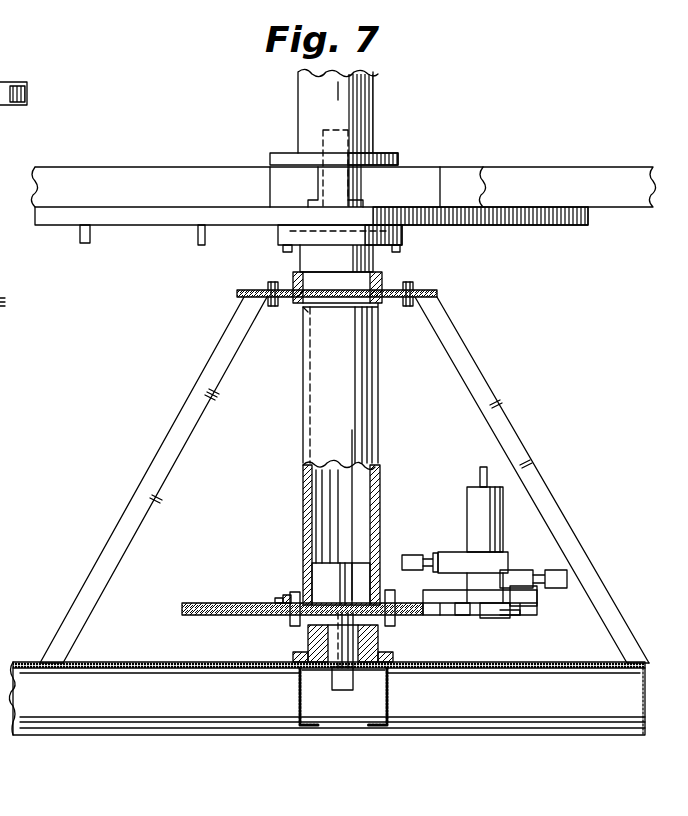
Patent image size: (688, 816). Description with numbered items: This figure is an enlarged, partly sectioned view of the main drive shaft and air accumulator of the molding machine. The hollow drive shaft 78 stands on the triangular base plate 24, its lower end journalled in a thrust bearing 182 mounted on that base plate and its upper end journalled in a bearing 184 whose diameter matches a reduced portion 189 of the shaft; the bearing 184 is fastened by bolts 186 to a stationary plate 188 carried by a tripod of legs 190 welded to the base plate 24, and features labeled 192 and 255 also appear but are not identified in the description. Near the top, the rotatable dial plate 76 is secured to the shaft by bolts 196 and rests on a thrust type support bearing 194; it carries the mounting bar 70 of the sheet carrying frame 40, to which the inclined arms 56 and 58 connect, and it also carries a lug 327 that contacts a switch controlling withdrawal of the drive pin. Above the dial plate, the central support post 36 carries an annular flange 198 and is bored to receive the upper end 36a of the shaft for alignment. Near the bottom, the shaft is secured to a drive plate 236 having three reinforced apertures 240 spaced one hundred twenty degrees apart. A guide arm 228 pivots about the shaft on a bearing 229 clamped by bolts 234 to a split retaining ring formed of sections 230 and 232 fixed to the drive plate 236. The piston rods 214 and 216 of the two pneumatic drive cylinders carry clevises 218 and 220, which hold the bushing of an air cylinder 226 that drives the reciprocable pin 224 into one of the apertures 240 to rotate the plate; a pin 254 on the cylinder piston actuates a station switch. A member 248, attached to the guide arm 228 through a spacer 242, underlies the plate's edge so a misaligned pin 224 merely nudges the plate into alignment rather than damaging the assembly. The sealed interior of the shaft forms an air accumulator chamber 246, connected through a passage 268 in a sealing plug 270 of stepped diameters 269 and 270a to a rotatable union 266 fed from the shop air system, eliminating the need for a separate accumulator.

The base plate 24 is at (640, 720).
The central support post 36 is at (363, 88).
The upper end of the drive shaft 36a is at (358, 184).
The sheet carrying frame 40 is at (345, 167).
The arm 56 is at (150, 185).
The arm 58 is at (602, 156).
The mounting bar 70 is at (410, 190).
The dial plate 76 is at (527, 217).
The drive shaft 78 is at (360, 430).
The thrust bearing 182 is at (310, 643).
The bearing 184 is at (382, 302).
The bolts 186 is at (268, 282).
The stationary plate 188 is at (245, 300).
The reduced portion of the shaft 189 is at (303, 310).
The legs 190 is at (205, 403).
The strut feet 192 is at (42, 660).
The thrust type support bearing 194 is at (292, 232).
The bolts 196 is at (286, 250).
The annular flange 198 is at (290, 153).
The piston rod 214 is at (414, 557).
The piston rod 216 is at (565, 575).
The clevis 218 is at (490, 563).
The clevis 220 is at (525, 572).
The pin 224 is at (500, 610).
The air cylinder 226 is at (497, 517).
The guide arm 228 is at (285, 600).
The bearing 229 is at (283, 602).
The split retaining ring section 230 is at (286, 590).
The split retaining ring section 232 is at (386, 590).
The bolts 234 is at (294, 618).
The drive plate 236 is at (191, 618).
The reinforced apertures 240 is at (462, 618).
The spacer 242 is at (537, 606).
The air accumulator chamber 246 is at (358, 480).
The member 248 is at (516, 622).
The pin 254 is at (484, 470).
The pin 255 is at (198, 237).
The rotatable union 266 is at (343, 690).
The passage 268 is at (300, 704).
The stepped diameter 269 is at (300, 685).
The sealing plug 270 is at (380, 492).
The stepped diameter 270a is at (327, 597).
The lug 327 is at (80, 232).